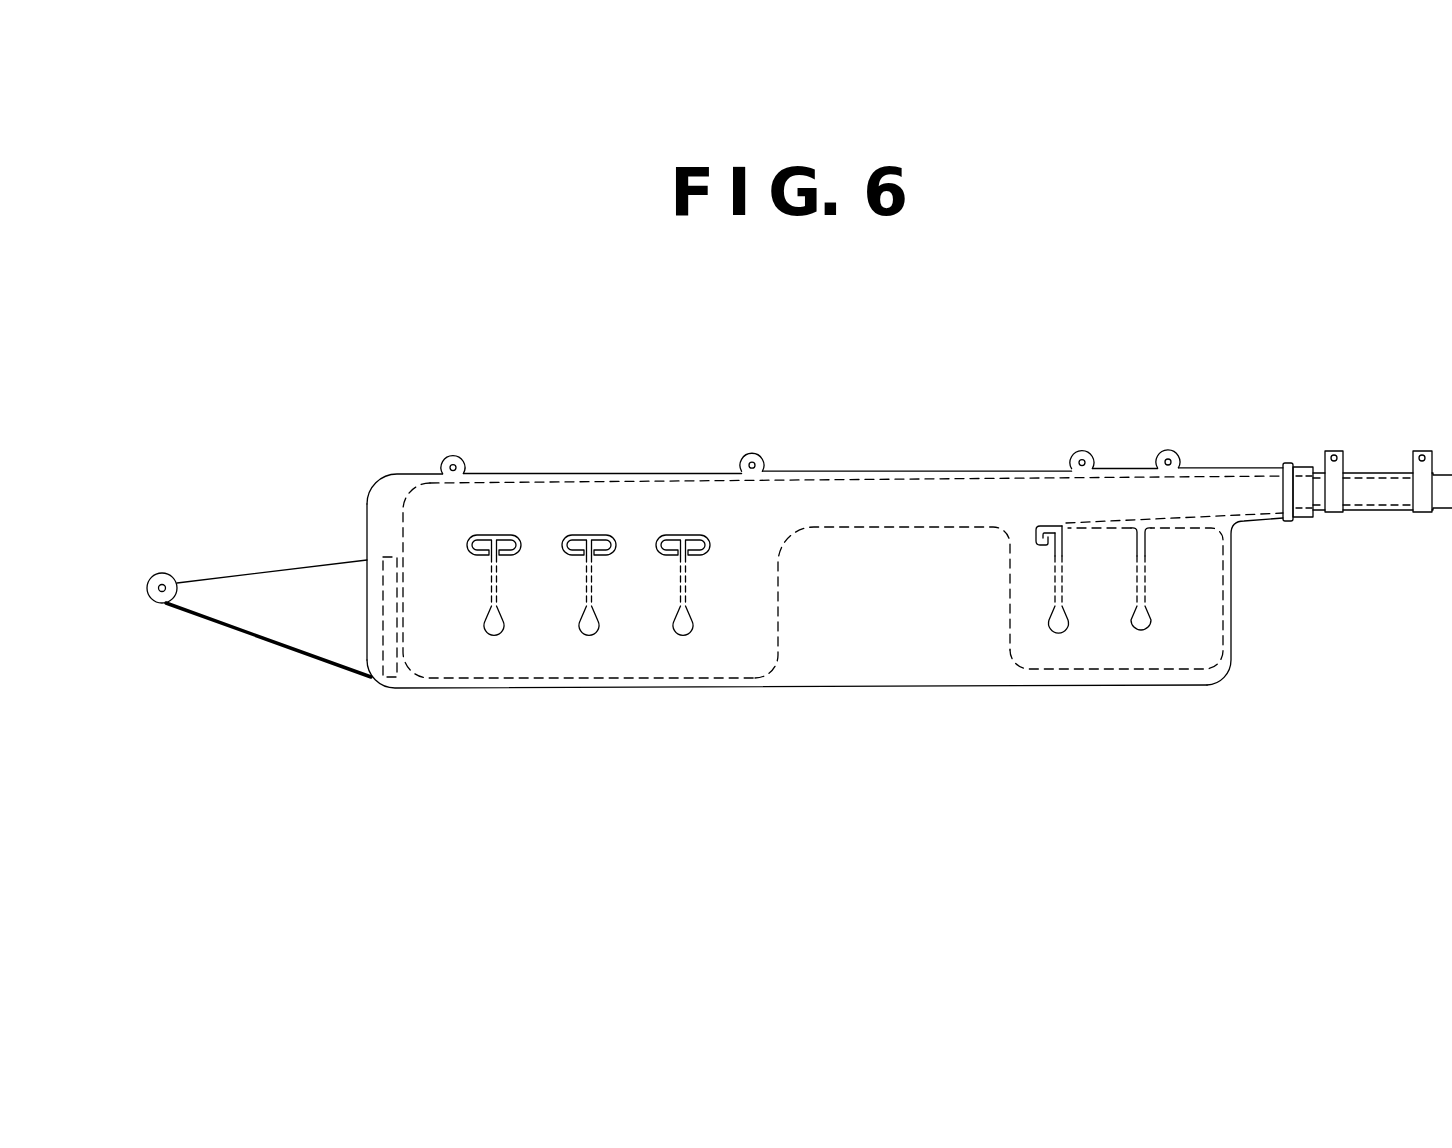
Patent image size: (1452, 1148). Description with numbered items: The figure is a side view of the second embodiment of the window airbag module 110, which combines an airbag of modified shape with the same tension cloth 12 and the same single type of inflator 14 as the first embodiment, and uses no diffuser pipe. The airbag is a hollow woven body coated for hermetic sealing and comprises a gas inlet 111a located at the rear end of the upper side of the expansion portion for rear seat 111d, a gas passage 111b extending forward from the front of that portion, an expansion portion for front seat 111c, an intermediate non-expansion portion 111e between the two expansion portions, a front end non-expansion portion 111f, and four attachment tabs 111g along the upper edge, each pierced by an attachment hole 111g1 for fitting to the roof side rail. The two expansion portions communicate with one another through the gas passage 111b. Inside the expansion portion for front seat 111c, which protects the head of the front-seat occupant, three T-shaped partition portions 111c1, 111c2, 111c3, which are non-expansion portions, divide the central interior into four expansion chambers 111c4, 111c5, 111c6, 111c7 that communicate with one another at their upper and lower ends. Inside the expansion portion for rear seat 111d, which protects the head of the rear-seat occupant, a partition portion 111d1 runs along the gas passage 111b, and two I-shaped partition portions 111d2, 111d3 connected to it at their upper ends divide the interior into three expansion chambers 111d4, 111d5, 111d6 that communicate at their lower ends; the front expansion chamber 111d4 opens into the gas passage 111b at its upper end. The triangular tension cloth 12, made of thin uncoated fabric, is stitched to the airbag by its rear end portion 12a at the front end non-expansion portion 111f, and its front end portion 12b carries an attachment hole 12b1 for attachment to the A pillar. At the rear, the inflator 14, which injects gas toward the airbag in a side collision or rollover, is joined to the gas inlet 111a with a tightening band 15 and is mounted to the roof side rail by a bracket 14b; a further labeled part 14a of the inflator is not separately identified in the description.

The tension cloth 12 is at (258, 628).
The rear end portion 12a is at (375, 655).
The front end portion 12b is at (165, 604).
The attachment hole 12b1 is at (164, 573).
The inflator 14 is at (1380, 483).
The pipe mounting tab 14a is at (1422, 514).
The bracket 14b is at (1335, 515).
The tightening band 15 is at (1288, 522).
The airbag module 110 is at (862, 446).
The gas inlet 111a is at (1300, 467).
The gas passage 111b is at (882, 602).
The expansion portion for front seat 111c is at (616, 643).
The T-shaped partition portion 111c1 is at (490, 532).
The T-shaped partition portion 111c2 is at (600, 522).
The T-shaped partition portion 111c3 is at (683, 532).
The expansion chamber 111c4 is at (443, 597).
The expansion chamber 111c5 is at (538, 597).
The expansion chamber 111c6 is at (638, 598).
The expansion chamber 111c7 is at (722, 592).
The expansion portion for rear seat 111d is at (1060, 571).
The partition portion 111d1 is at (1062, 526).
The I-shaped partition portion 111d2 is at (1027, 666).
The I-shaped partition portion 111d3 is at (1135, 625).
The expansion chamber 111d4 is at (1040, 586).
The expansion chamber 111d5 is at (1102, 615).
The expansion chamber 111d6 is at (1383, 678).
The intermediate non-expansion portion 111e is at (887, 672).
The front end non-expansion portion 111f is at (380, 527).
The attachment tabs 111g is at (455, 456).
The attachment holes 111g1 is at (443, 465).